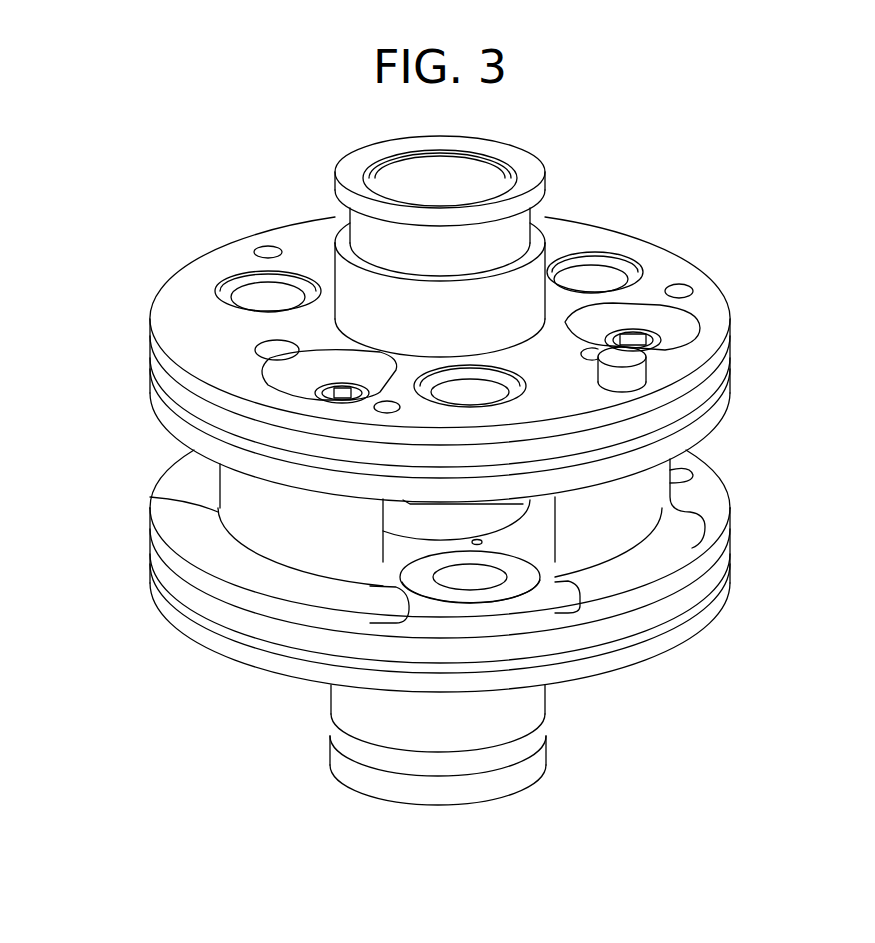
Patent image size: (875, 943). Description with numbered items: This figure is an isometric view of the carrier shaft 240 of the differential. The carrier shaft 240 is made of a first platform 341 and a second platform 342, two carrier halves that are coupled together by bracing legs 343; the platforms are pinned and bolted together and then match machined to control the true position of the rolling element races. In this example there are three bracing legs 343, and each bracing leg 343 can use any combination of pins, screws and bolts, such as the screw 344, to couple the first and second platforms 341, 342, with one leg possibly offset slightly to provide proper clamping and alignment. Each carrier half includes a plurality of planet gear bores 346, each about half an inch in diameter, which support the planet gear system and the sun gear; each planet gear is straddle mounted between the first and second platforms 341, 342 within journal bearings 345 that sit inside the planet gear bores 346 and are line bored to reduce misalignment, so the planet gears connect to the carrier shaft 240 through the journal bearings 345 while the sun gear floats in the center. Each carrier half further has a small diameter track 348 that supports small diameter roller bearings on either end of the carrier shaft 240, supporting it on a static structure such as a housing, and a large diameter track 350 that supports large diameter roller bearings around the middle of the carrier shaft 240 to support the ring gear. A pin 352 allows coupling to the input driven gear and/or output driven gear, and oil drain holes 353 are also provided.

The carrier shaft 240 is at (824, 179).
The first platform 341 is at (728, 296).
The second platform 342 is at (723, 483).
The bracing legs 343 is at (297, 515).
The screw 344 is at (662, 338).
The journal bearings 345 is at (421, 583).
The planet gear bores 346 is at (212, 274).
The small diameter track 348 is at (357, 232).
The large diameter track 350 is at (176, 385).
The pin 352 is at (647, 367).
The oil drain holes 353 is at (262, 253).